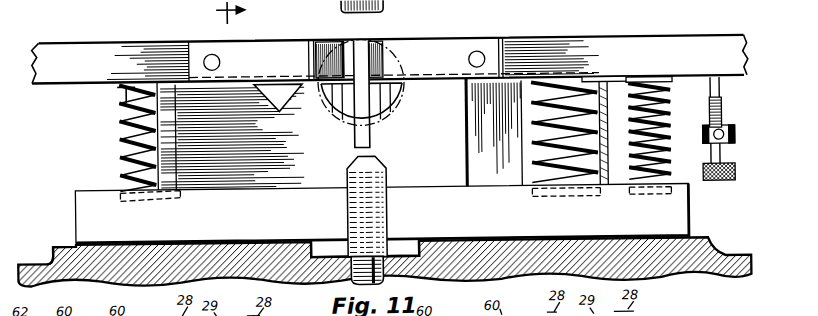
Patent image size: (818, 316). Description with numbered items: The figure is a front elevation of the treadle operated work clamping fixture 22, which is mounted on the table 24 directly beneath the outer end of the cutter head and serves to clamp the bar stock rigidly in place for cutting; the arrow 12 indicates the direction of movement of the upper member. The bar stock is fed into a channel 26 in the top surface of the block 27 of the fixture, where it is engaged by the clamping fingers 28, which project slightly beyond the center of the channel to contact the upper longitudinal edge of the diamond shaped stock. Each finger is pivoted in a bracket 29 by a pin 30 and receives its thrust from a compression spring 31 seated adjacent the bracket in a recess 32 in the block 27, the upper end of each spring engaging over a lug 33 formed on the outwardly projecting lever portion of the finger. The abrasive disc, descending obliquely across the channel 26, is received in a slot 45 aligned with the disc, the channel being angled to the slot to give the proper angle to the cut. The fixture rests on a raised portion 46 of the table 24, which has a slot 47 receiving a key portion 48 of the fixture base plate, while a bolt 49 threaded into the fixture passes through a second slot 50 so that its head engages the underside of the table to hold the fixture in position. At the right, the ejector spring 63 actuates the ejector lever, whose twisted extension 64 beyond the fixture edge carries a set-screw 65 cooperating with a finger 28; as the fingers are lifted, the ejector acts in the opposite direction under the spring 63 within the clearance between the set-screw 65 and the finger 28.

The direction of movement arrow 12 is at (242, 13).
The work clamping fixture 22 is at (437, 50).
The table 24 is at (30, 266).
The channel 26 is at (271, 83).
The block 27 is at (437, 97).
The clamping fingers 28 is at (378, 43).
The bracket 29 is at (251, 56).
The pin 30 is at (216, 52).
The compression spring 31 is at (120, 135).
The recess 32 is at (179, 199).
The lug 33 is at (127, 95).
The slot 45 is at (371, 135).
The raised portion 46 is at (47, 250).
The slot 47 is at (292, 241).
The key portion 48 is at (322, 256).
The bolt 49 is at (386, 255).
The second slot 50 is at (386, 266).
The spring 63 is at (668, 136).
The extension 64 is at (722, 92).
The set-screw 65 is at (724, 110).